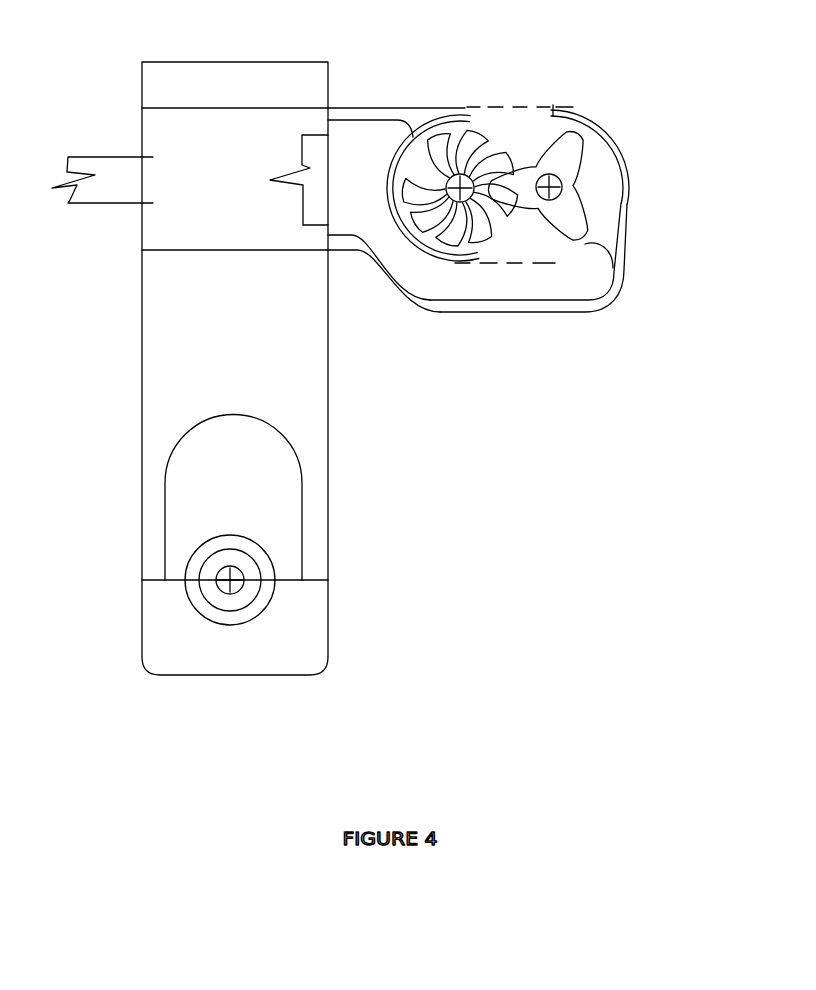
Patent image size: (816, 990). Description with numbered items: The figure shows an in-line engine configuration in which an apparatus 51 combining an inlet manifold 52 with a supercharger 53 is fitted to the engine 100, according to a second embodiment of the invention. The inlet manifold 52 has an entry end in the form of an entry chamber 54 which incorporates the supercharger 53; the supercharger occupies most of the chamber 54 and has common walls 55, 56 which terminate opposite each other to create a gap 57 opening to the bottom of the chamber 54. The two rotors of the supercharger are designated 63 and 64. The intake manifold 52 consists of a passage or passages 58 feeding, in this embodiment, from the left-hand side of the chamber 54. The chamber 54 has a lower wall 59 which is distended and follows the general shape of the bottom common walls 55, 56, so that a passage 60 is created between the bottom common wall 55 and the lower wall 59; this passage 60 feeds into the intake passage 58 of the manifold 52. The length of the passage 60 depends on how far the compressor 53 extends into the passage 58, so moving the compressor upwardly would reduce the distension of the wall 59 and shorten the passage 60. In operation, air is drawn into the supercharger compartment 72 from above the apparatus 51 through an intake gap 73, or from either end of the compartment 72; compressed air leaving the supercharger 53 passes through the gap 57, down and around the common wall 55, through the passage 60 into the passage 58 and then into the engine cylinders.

The apparatus 51 is at (627, 198).
The inlet manifold 52 is at (404, 107).
The supercharger 53 is at (551, 176).
The entry chamber 54 is at (583, 260).
The common wall 55 is at (430, 257).
The common wall 56 is at (567, 280).
The gap 57 is at (507, 268).
The passage 58 is at (358, 140).
The lower wall 59 is at (479, 312).
The passage 60 is at (402, 253).
The rotor 63 is at (452, 125).
The rotor 64 is at (577, 143).
The supercharger compartment 72 is at (590, 160).
The intake gap 73 is at (507, 104).
The engine 100 is at (312, 673).